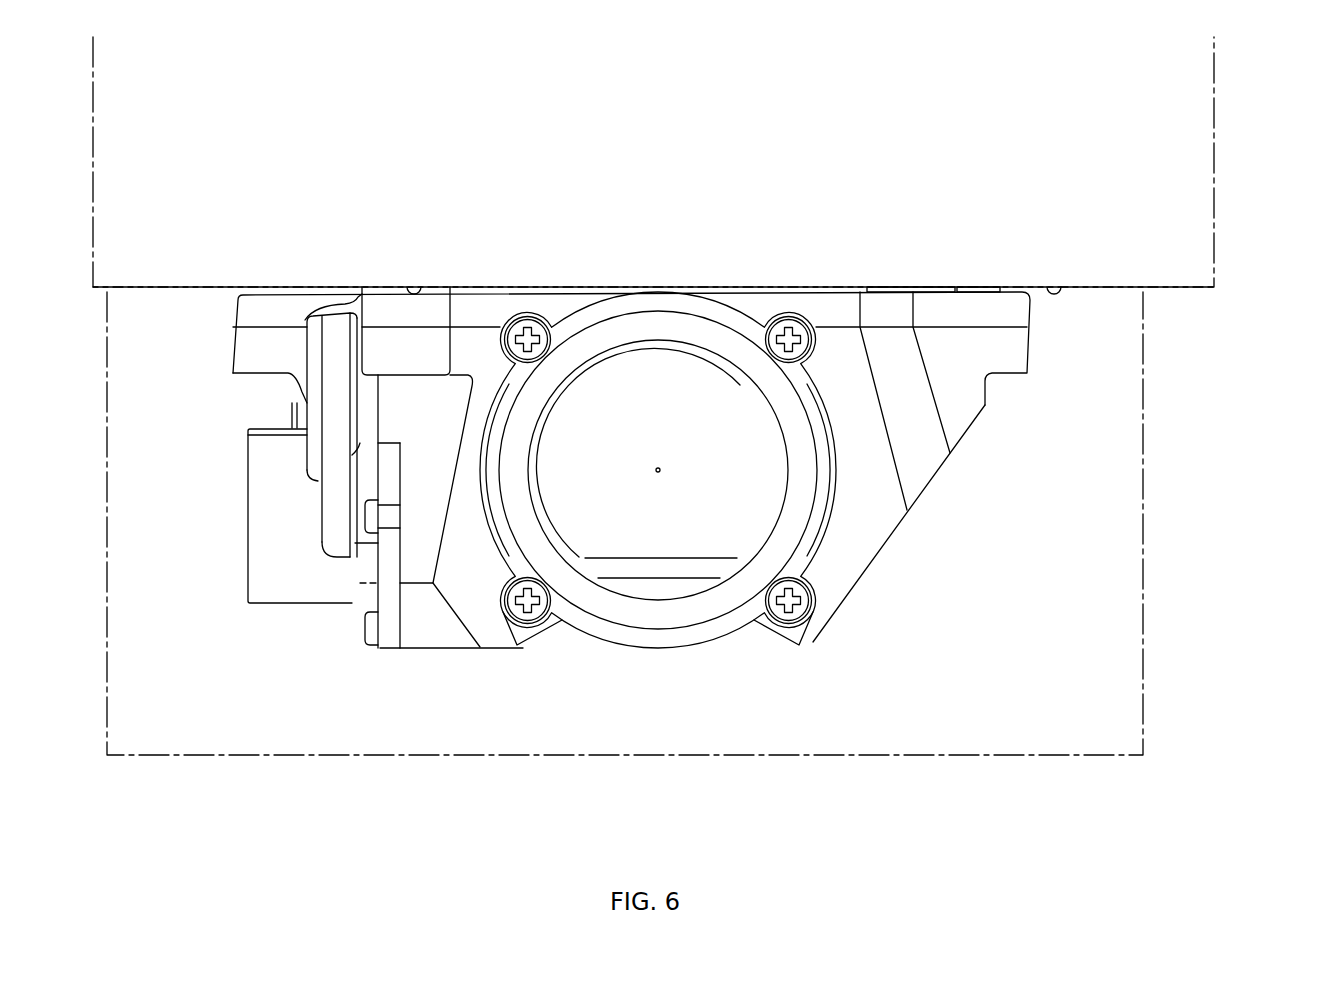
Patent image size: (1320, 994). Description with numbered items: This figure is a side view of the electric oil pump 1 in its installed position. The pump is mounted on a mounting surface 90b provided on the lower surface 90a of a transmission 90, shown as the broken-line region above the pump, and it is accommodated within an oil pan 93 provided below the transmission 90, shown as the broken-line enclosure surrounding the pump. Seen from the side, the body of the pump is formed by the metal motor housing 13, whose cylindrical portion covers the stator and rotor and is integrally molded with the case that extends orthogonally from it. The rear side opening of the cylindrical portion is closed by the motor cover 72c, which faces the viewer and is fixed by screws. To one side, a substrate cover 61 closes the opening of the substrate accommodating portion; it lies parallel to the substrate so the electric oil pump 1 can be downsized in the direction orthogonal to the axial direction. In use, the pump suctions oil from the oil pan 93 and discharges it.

The electric oil pump 1 is at (962, 497).
The motor housing 13 is at (900, 576).
The substrate cover 61 is at (352, 615).
The motor cover 72c is at (698, 545).
The transmission 90 is at (1214, 198).
The lower surface 90a is at (1175, 290).
The mounting surface 90b is at (420, 285).
The oil pan 93 is at (990, 755).